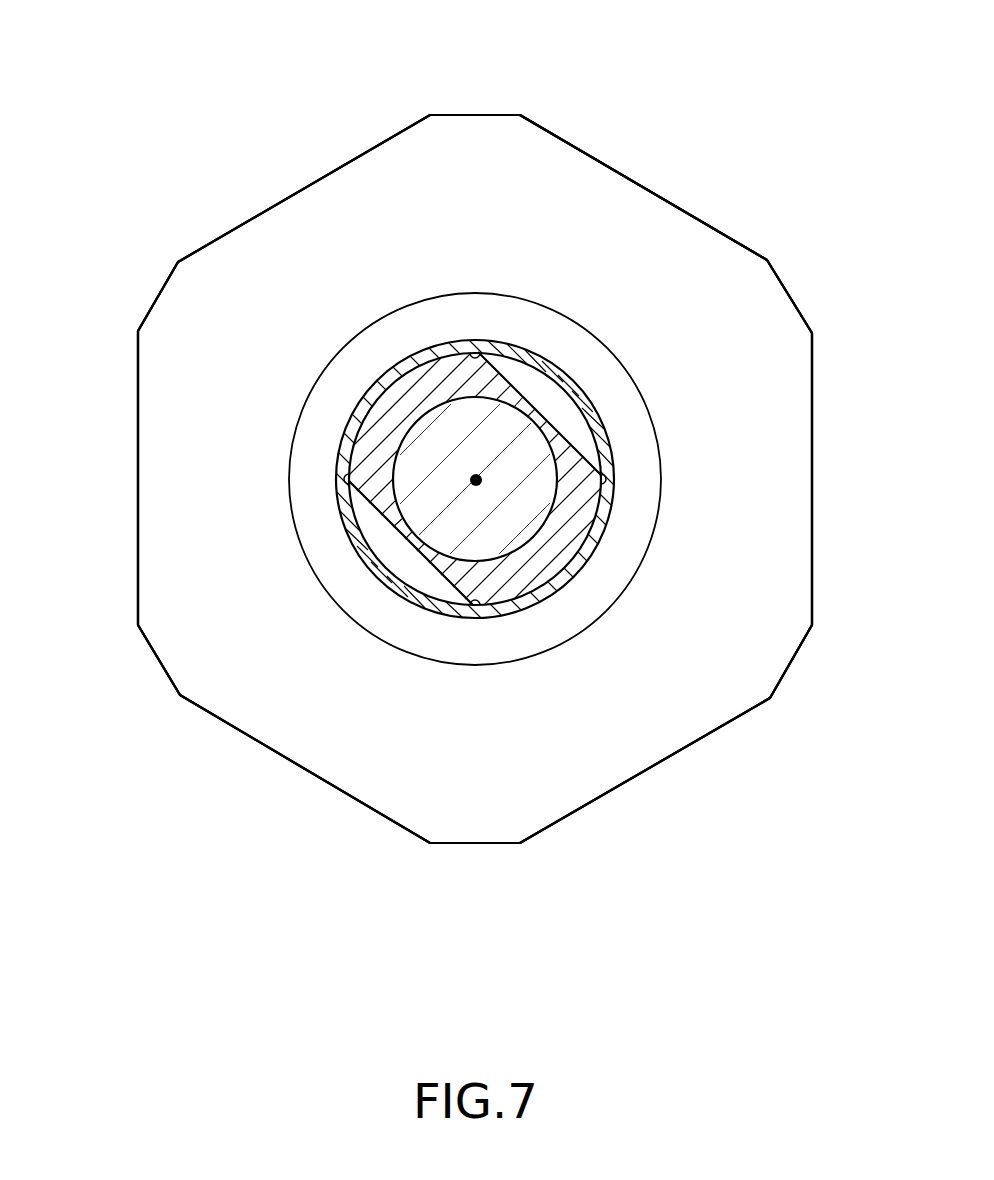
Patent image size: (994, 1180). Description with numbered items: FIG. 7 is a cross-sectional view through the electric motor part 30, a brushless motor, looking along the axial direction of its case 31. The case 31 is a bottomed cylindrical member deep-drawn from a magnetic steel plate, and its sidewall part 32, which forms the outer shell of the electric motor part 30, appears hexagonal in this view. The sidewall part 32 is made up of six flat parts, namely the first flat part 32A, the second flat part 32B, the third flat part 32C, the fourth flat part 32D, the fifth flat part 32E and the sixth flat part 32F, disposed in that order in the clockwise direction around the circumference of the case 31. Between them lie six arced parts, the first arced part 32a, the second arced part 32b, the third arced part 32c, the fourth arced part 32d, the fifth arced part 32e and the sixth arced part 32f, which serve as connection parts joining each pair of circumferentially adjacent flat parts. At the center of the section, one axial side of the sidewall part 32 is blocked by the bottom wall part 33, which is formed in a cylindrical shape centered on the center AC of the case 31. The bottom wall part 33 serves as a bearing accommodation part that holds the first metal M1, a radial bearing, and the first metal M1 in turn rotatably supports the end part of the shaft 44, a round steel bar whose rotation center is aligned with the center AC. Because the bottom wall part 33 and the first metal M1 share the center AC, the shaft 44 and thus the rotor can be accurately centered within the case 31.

The electric motor part 30 is at (228, 118).
The case 31 is at (588, 144).
The sidewall part 32 is at (707, 738).
The first flat part 32A is at (643, 185).
The second flat part 32B is at (813, 478).
The third flat part 32C is at (603, 795).
The fourth flat part 32D is at (282, 760).
The fifth flat part 32E is at (138, 471).
The sixth flat part 32F is at (305, 185).
The first arced part 32a is at (795, 295).
The second arced part 32b is at (797, 663).
The third arced part 32c is at (477, 847).
The fourth arced part 32d is at (155, 665).
The fifth arced part 32e is at (153, 294).
The sixth arced part 32f is at (477, 115).
The bottom wall part 33 is at (565, 388).
The shaft 44 is at (492, 454).
The first metal M1 is at (400, 565).
The center AC is at (477, 497).